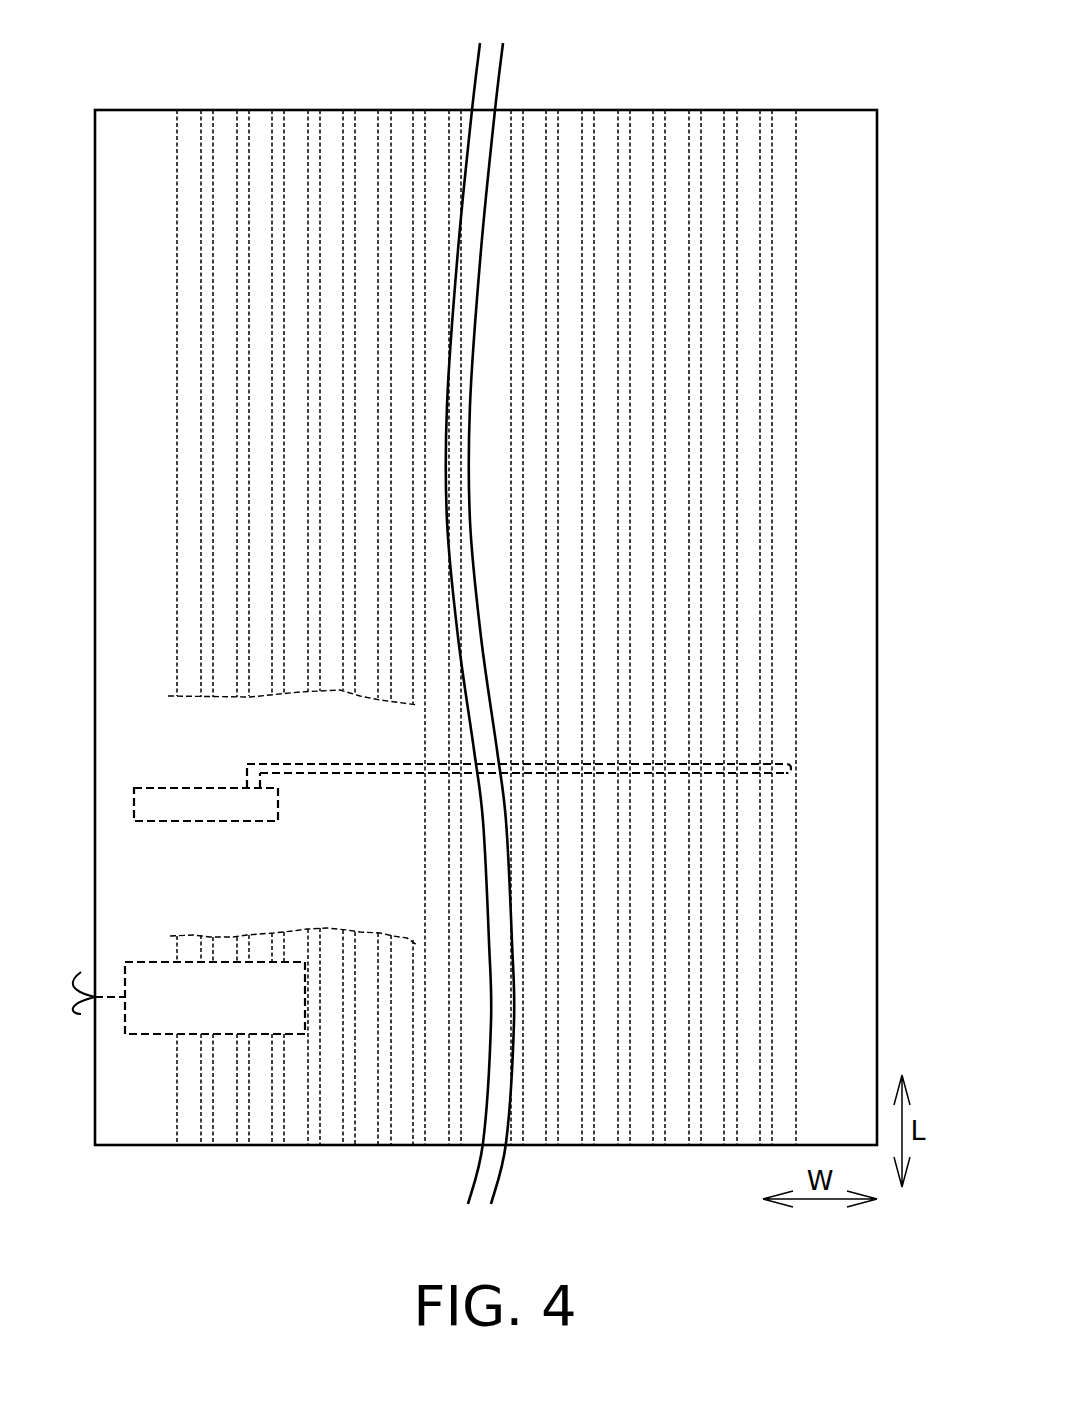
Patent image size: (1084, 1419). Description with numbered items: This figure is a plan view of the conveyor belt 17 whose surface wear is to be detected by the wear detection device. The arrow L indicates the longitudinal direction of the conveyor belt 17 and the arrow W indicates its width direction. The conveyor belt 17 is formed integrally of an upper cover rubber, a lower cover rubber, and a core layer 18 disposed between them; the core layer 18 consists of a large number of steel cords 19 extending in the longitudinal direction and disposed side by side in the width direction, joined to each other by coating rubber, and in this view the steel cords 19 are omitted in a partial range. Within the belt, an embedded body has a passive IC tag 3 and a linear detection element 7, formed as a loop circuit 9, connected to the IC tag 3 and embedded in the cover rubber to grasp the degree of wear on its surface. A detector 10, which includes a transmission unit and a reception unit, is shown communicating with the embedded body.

The passive IC tag 3 is at (217, 808).
The detection element 7 is at (317, 774).
The loop circuit 9 is at (375, 775).
The detector 10 is at (145, 968).
The conveyor belt 17 is at (625, 88).
The core layer 18 is at (822, 502).
The steel cords 19 is at (259, 118).